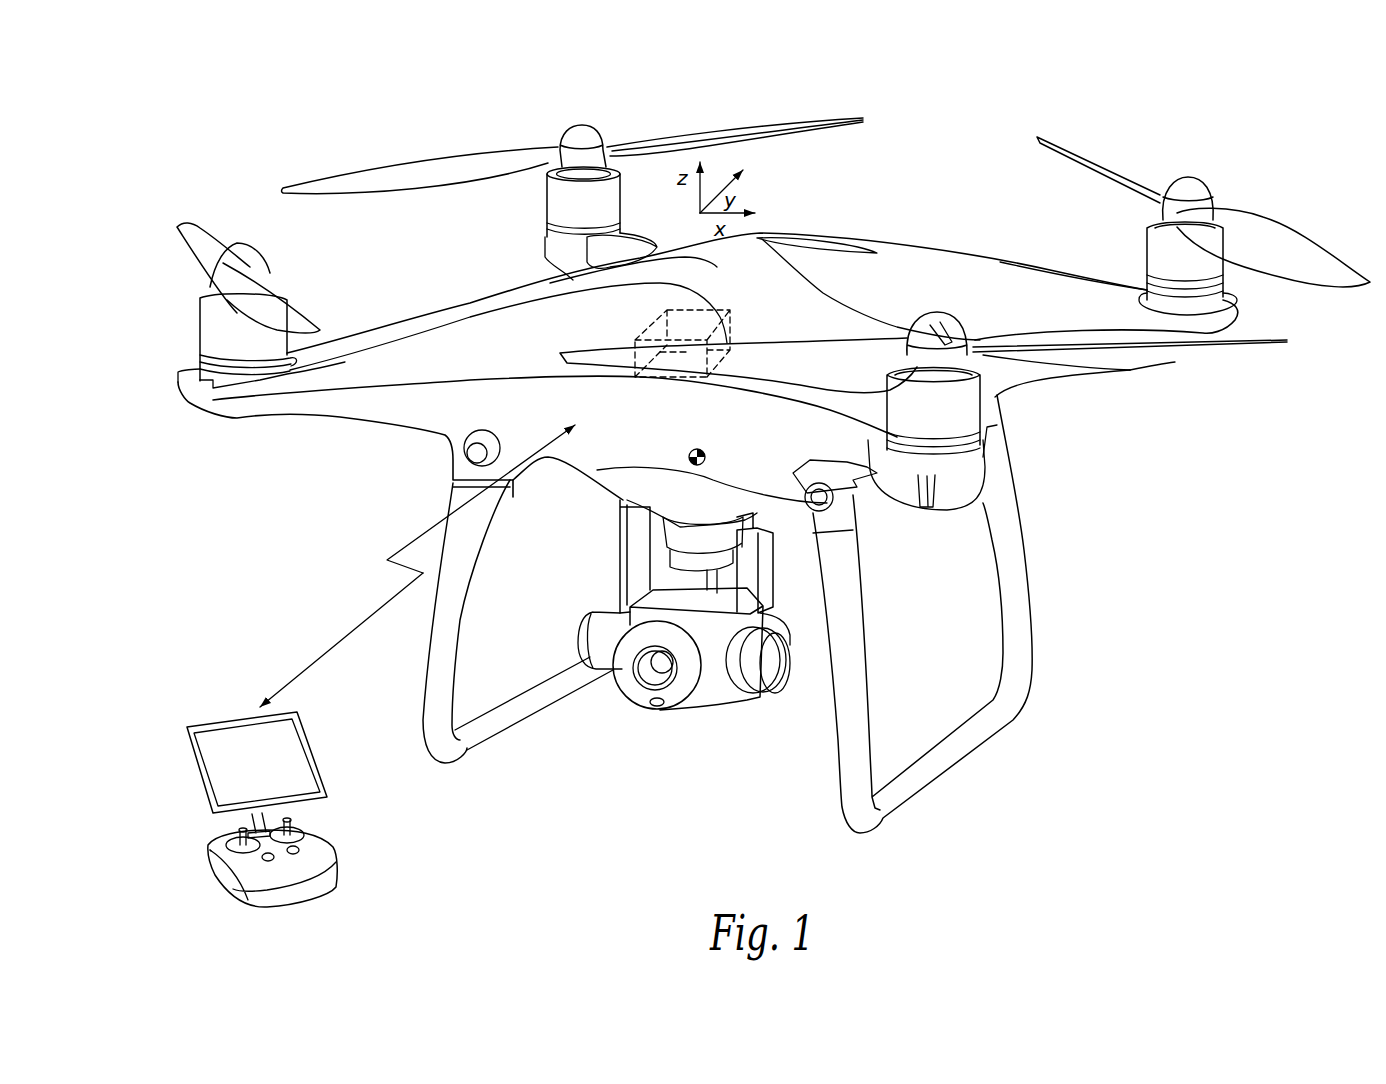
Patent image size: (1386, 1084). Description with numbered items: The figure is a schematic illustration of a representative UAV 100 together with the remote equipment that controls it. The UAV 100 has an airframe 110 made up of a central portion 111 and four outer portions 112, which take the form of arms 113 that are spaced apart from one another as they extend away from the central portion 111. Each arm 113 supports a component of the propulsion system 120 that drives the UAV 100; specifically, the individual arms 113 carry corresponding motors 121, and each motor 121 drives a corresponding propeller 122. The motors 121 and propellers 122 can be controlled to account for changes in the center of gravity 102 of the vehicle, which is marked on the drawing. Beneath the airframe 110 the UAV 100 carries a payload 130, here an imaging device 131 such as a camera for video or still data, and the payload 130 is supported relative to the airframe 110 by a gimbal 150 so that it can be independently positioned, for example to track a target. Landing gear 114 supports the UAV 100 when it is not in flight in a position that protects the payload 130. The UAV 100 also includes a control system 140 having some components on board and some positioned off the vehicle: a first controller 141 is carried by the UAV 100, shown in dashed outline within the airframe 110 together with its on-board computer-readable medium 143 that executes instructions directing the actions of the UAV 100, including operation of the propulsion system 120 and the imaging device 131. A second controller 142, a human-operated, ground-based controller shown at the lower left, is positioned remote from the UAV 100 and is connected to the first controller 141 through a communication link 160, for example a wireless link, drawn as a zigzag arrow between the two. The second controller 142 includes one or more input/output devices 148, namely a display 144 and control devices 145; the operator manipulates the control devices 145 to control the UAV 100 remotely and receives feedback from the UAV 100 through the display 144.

The UAV 100 is at (1165, 119).
The center of gravity 102 is at (706, 452).
The airframe 110 is at (843, 212).
The central portion 111 is at (717, 267).
The outer portions 112 is at (1030, 252).
The arms 113 is at (1050, 367).
The landing gear 114 is at (437, 738).
The propulsion system 120 is at (183, 456).
The motors 121 is at (207, 340).
The propellers 122 is at (293, 307).
The payload 130 is at (762, 746).
The imaging device 131 is at (723, 697).
The control system 140 is at (462, 846).
The first controller 141 is at (655, 322).
The second controller 142 is at (197, 827).
The computer-readable medium 143 is at (687, 350).
The display 144 is at (220, 737).
The control devices 145 is at (238, 847).
The input/output devices 148 is at (350, 851).
The gimbal 150 is at (791, 610).
The communication link 160 is at (370, 618).